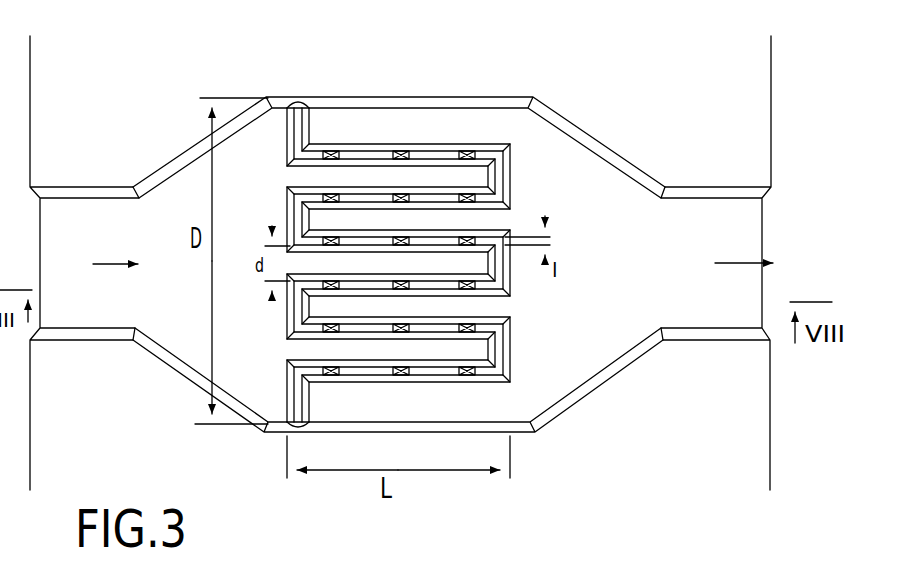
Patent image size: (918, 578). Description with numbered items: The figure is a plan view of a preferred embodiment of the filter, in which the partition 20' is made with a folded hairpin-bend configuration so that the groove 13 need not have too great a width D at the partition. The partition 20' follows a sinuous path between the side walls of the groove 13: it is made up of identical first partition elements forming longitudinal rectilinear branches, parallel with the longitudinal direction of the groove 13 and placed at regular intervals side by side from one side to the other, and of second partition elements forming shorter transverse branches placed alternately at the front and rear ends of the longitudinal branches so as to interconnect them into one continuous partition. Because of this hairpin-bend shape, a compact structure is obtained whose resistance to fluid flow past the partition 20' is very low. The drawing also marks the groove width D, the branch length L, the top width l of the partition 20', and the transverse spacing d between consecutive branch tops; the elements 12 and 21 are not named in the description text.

The outlet pipe 12 is at (760, 88).
The groove 13 is at (580, 163).
The hairpin-bend partition 20' is at (398, 238).
The heating conductors 21 is at (467, 287).